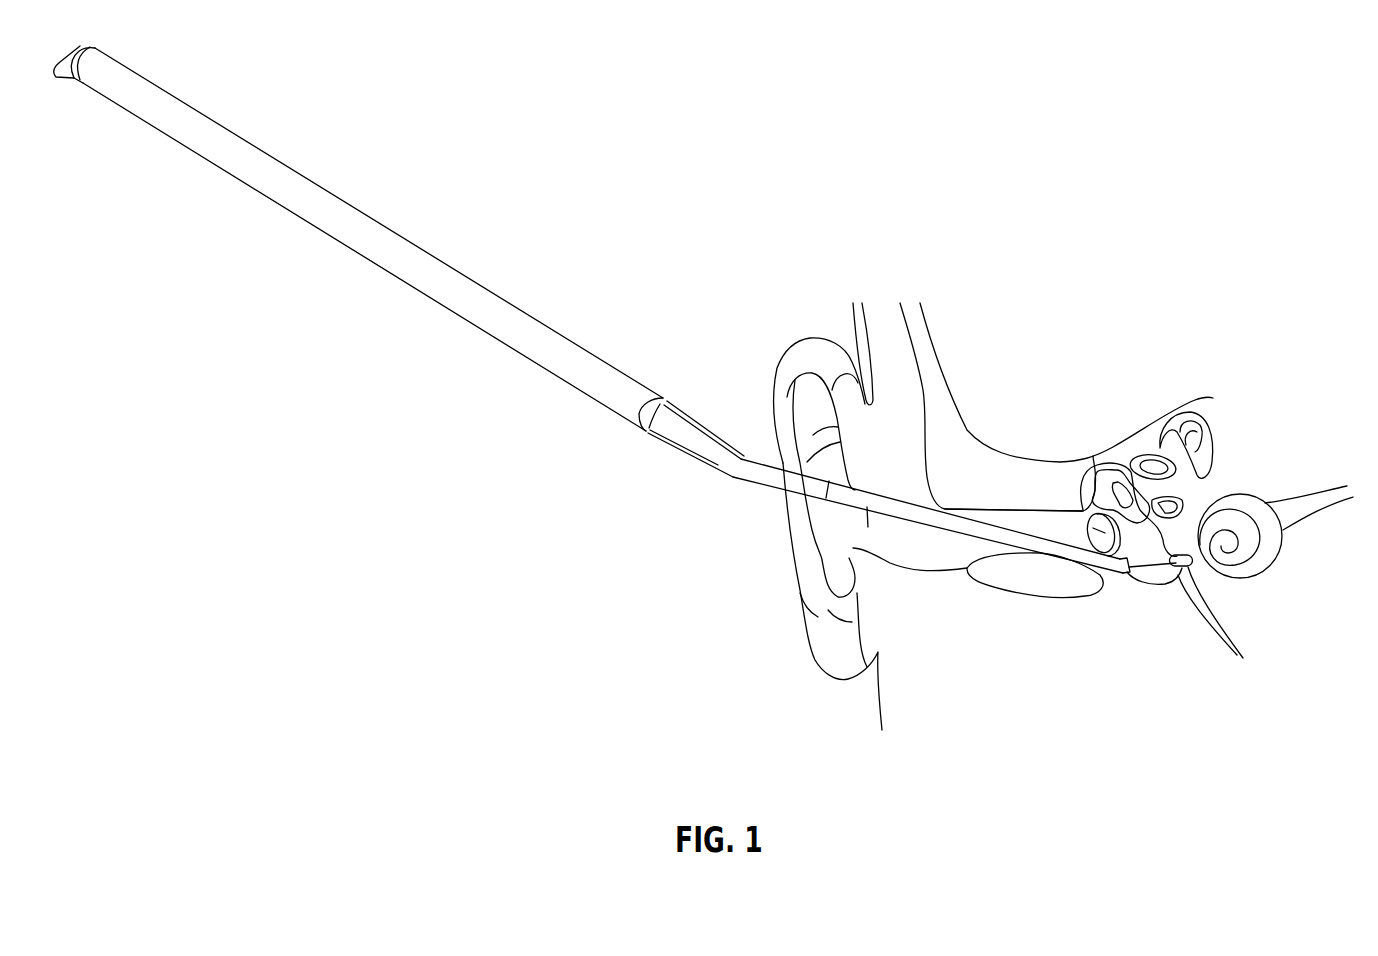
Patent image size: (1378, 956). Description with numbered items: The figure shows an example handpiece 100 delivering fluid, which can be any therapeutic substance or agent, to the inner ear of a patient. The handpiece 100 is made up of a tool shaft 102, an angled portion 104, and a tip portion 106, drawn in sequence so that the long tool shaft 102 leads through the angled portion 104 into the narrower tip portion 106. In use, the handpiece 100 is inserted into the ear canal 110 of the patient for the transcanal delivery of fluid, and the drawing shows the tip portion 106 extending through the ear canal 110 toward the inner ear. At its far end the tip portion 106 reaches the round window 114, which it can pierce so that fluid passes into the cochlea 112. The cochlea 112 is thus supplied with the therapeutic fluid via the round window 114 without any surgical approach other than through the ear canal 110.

The handpiece 100 is at (615, 309).
The tool shaft 102 is at (183, 135).
The angled portion 104 is at (725, 463).
The tip portion 106 is at (893, 500).
The ear canal 110 is at (887, 537).
The cochlea 112 is at (1248, 503).
The round window 114 is at (1193, 573).